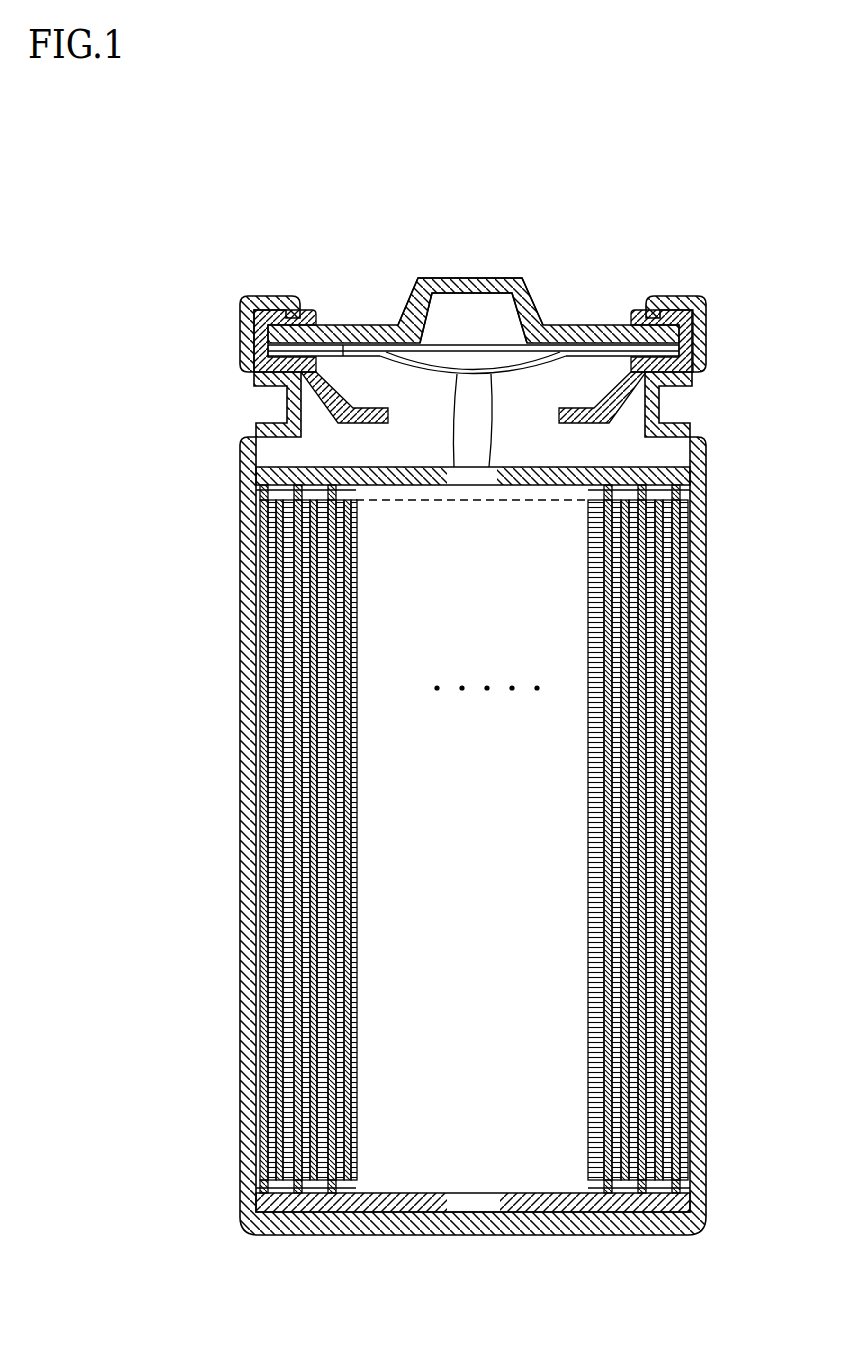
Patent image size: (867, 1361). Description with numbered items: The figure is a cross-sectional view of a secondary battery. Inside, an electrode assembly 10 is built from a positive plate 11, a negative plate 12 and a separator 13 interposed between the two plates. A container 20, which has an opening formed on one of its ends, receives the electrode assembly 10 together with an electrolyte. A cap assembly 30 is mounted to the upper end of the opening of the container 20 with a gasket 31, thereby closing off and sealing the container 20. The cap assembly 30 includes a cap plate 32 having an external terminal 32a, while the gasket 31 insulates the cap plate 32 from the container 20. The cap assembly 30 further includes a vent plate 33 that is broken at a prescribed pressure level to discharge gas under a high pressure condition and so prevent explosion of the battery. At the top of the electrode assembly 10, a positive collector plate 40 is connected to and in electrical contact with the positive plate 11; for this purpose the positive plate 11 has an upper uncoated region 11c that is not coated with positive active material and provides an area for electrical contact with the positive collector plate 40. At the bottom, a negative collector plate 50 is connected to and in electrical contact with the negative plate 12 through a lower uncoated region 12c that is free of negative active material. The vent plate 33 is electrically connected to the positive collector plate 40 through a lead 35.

The electrode assembly 10 is at (460, 840).
The positive plate 11 is at (264, 573).
The upper uncoated region 11c is at (258, 490).
The negative plate 12 is at (270, 1133).
The lower uncoated region 12c is at (258, 1200).
The separator 13 is at (290, 748).
The container 20 is at (707, 668).
The cap assembly 30 is at (461, 346).
The gasket 31 is at (262, 299).
The cap plate 32 is at (394, 328).
The external terminal 32a is at (490, 278).
The vent plate 33 is at (342, 346).
The lead 35 is at (495, 388).
The positive collector plate 40 is at (660, 462).
The negative collector plate 50 is at (288, 1203).